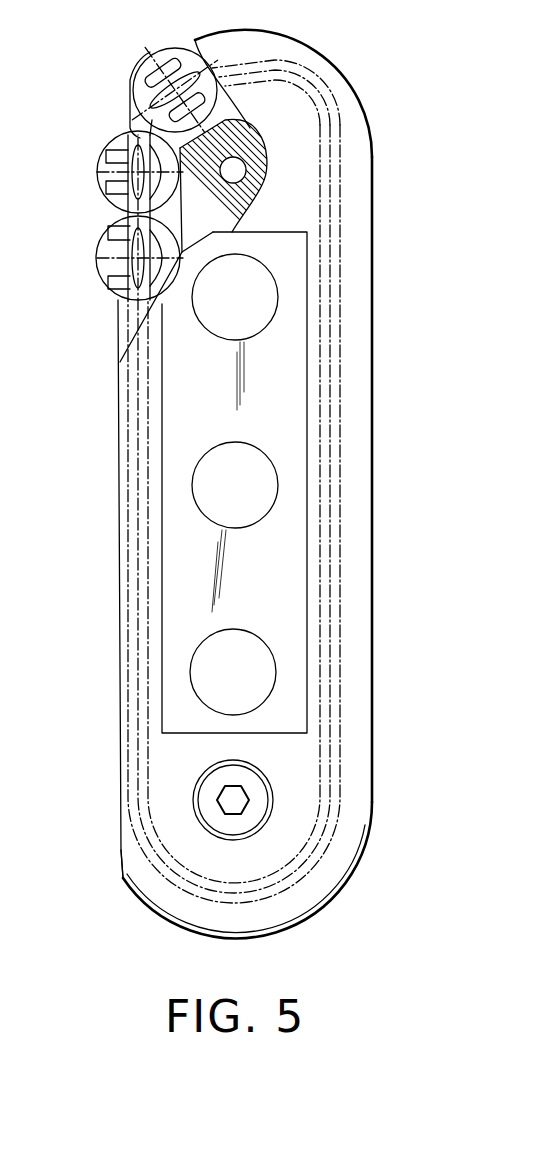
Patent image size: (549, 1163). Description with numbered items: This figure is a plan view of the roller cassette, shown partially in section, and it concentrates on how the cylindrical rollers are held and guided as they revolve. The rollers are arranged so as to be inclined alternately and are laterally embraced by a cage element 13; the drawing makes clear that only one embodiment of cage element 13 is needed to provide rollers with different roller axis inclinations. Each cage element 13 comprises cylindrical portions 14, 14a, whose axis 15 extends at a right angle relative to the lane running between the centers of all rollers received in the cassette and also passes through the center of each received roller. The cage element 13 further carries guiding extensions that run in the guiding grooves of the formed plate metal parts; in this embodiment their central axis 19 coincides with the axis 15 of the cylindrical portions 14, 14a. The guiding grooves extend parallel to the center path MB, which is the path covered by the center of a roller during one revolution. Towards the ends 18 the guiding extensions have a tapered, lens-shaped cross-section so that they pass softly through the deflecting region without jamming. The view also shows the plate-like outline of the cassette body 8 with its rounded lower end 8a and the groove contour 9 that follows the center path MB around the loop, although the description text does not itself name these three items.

The plate 8 is at (332, 92).
The lower end of plate 8a is at (317, 882).
The groove 9 is at (338, 543).
The cage element 13 is at (140, 131).
The cylindrical portion 14 is at (130, 288).
The cylindrical portion 14a is at (113, 230).
The axis 15 is at (117, 172).
The end 18 is at (140, 137).
The central axis 19 is at (218, 117).
The center path MB is at (138, 594).